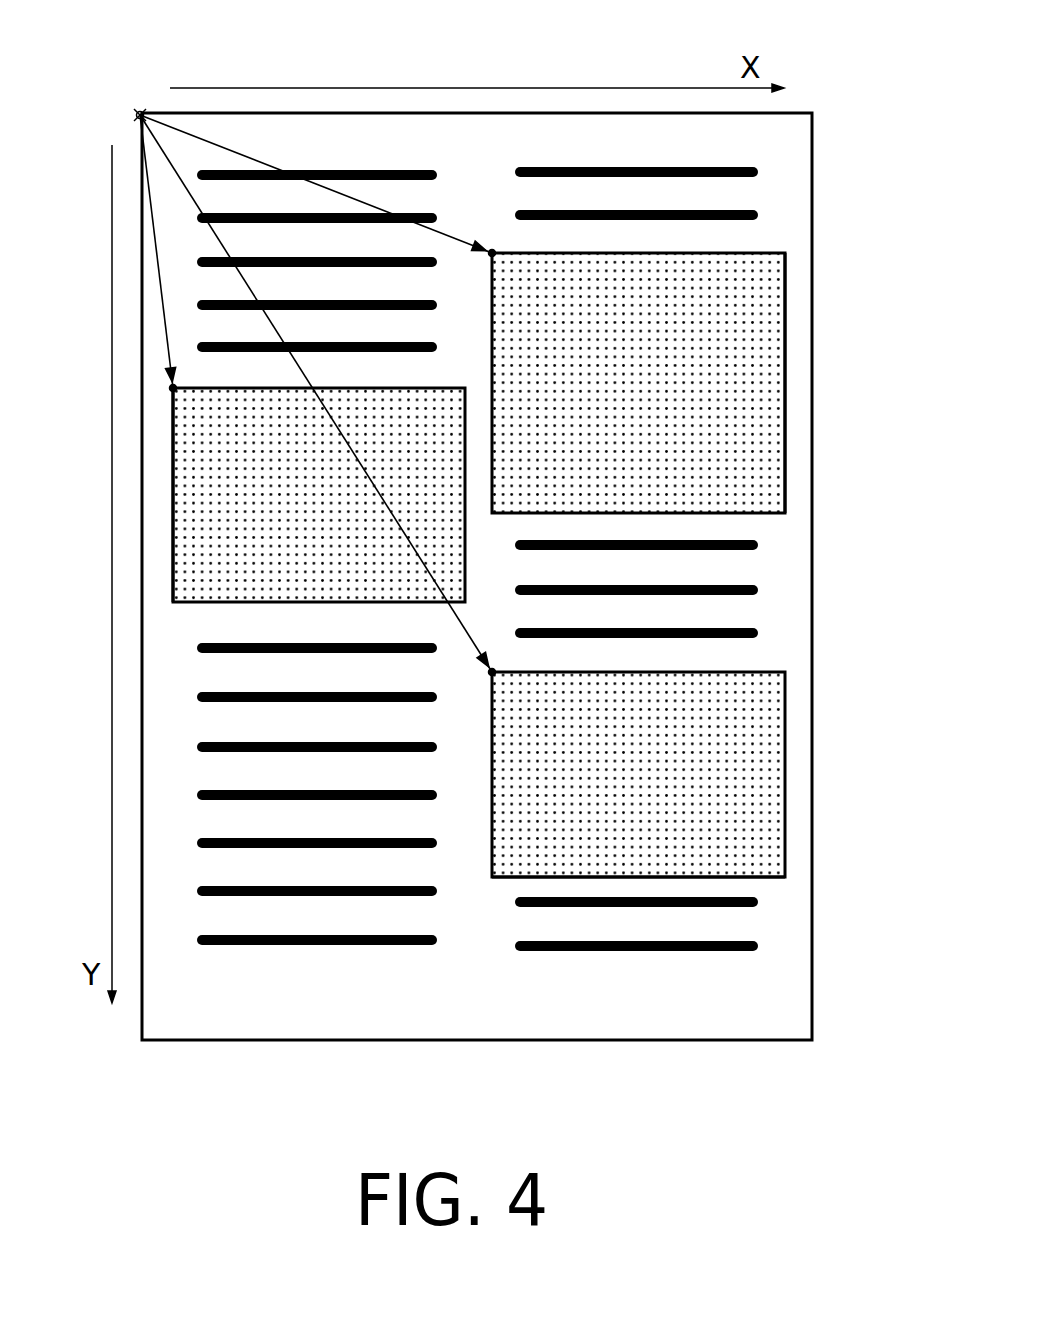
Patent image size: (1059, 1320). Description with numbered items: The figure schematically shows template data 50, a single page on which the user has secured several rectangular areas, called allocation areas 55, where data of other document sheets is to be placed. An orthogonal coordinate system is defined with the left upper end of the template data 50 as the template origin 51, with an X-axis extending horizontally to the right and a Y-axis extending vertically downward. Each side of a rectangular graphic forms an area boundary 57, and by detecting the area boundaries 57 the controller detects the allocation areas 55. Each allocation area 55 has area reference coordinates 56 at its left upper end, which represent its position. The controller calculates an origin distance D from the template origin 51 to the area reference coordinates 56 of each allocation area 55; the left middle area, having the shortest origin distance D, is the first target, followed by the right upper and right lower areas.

The template data 50 is at (798, 104).
The template origin 51 is at (137, 110).
The allocation area 55 is at (479, 565).
The area reference coordinates 56 is at (170, 384).
The area boundary 57 is at (173, 522).
The origin distance D is at (248, 154).